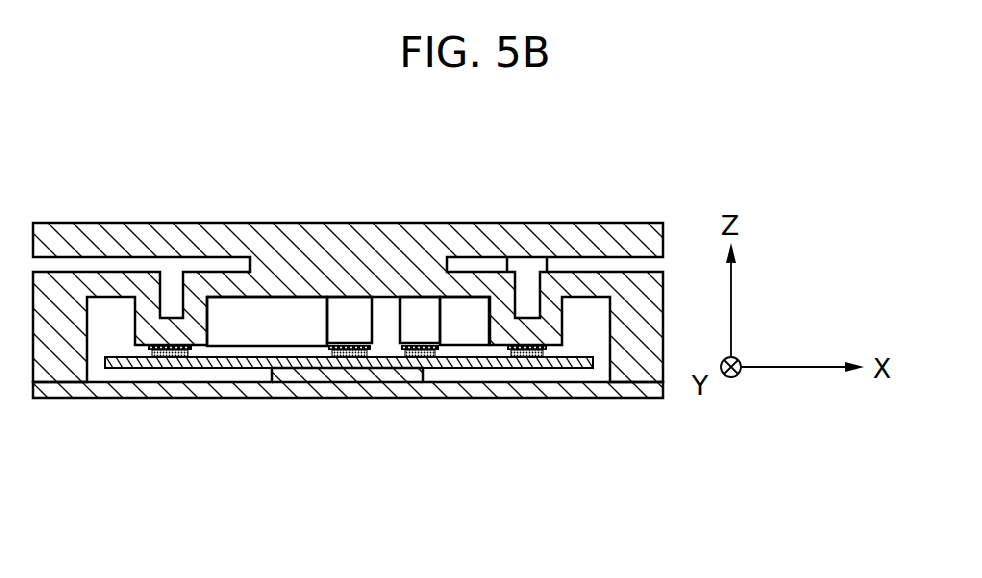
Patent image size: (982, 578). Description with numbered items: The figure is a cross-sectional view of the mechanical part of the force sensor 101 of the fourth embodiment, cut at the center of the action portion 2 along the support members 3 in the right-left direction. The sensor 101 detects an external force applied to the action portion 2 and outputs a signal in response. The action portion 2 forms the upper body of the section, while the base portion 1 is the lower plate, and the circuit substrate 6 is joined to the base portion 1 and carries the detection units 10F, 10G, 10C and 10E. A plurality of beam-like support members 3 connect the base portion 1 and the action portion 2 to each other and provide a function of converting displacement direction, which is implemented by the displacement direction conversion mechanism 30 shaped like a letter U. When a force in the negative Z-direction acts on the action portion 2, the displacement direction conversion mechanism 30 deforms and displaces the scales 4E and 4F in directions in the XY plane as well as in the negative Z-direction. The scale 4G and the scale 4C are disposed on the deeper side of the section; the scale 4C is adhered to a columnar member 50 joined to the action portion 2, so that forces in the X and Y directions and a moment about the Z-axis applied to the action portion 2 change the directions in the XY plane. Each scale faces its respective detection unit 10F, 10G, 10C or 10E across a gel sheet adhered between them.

The sensor 101 is at (662, 137).
The base portion 1 is at (647, 392).
The action portion 2 is at (450, 233).
The support member 3 is at (113, 287).
The circuit substrate 6 is at (587, 364).
The displacement direction conversion mechanism 30 is at (147, 292).
The columnar member 50 is at (413, 310).
The scale 4F is at (160, 349).
The scale 4G is at (333, 350).
The scale 4C is at (415, 352).
The scale 4E is at (510, 349).
The detection unit 10F is at (178, 357).
The detection unit 10G is at (363, 357).
The detection unit 10C is at (437, 357).
The detection unit 10E is at (545, 358).